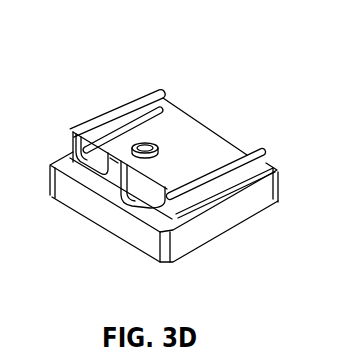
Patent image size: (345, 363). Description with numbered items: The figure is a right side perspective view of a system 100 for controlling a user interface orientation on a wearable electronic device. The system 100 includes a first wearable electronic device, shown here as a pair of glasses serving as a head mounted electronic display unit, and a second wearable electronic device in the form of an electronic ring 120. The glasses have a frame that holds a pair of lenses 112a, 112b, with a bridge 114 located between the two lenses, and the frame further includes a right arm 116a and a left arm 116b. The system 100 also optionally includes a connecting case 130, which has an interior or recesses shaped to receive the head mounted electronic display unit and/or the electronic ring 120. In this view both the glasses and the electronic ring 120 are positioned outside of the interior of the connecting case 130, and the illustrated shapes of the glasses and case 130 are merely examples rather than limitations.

The system 100 is at (213, 59).
The lens 112a is at (147, 196).
The lens 112b is at (86, 163).
The bridge 114 is at (119, 174).
The right arm 116a is at (221, 154).
The left arm 116b is at (98, 114).
The electronic ring 120 is at (157, 152).
The connecting case 130 is at (62, 157).